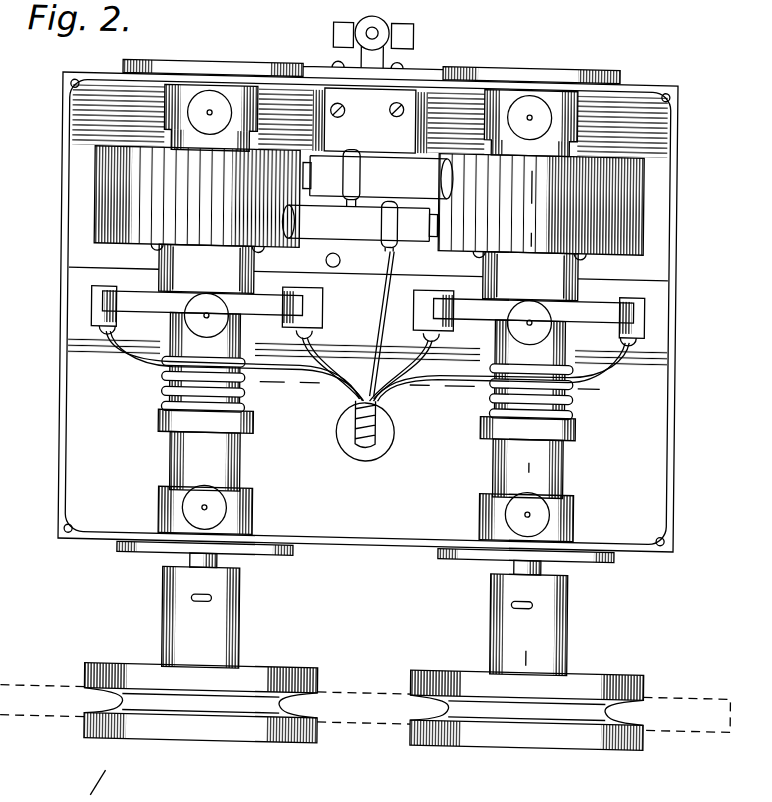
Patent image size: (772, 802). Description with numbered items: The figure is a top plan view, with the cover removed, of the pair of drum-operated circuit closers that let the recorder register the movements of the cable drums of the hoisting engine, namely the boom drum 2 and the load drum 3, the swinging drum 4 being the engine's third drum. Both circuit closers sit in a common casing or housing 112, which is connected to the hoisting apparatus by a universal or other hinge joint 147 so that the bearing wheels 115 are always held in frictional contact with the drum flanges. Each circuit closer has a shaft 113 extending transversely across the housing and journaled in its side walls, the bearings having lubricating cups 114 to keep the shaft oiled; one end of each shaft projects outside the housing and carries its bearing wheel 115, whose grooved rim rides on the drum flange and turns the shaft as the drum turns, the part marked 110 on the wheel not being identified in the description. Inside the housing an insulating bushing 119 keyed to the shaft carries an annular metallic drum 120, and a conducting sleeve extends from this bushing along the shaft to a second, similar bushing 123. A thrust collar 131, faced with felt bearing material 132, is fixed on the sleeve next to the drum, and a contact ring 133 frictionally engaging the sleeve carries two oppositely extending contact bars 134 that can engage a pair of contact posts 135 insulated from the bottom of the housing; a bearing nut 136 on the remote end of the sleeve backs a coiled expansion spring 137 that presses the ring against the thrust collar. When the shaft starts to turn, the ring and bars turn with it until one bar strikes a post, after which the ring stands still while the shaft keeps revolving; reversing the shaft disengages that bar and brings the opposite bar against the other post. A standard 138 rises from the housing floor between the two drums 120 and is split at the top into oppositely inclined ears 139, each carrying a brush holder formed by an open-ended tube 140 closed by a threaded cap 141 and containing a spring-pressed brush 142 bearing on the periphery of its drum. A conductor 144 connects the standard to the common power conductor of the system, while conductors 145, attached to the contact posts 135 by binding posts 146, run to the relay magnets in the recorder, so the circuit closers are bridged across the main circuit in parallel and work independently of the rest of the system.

The boom drum 2 is at (205, 720).
The load drum 3 is at (374, 562).
The swinging drum 4 is at (530, 414).
The pulley 110 is at (363, 744).
The housing 112 is at (612, 127).
The shaft 113 is at (395, 614).
The lubricating cups 114 is at (368, 280).
The bearing wheel 115 is at (206, 660).
The insulating bushing 119 is at (186, 64).
The annular metallic drum 120 is at (375, 200).
The bushing 123 is at (336, 464).
The thrust collar 131 is at (369, 248).
The bearing material 132 is at (376, 270).
The contact ring 133 is at (329, 365).
The contact bars 134 is at (374, 302).
The contact posts 135 is at (32, 219).
The bearing nut 136 is at (370, 430).
The coiled expansion spring 137 is at (322, 391).
The standard 138 is at (317, 74).
The ears 139 is at (348, 197).
The tube 140 is at (399, 185).
The cap 141 is at (408, 177).
The brush 142 is at (386, 224).
The conductor 144 is at (318, 233).
The conductors 145 is at (278, 374).
The binding posts 146 is at (554, 387).
The hinge joint 147 is at (397, 35).